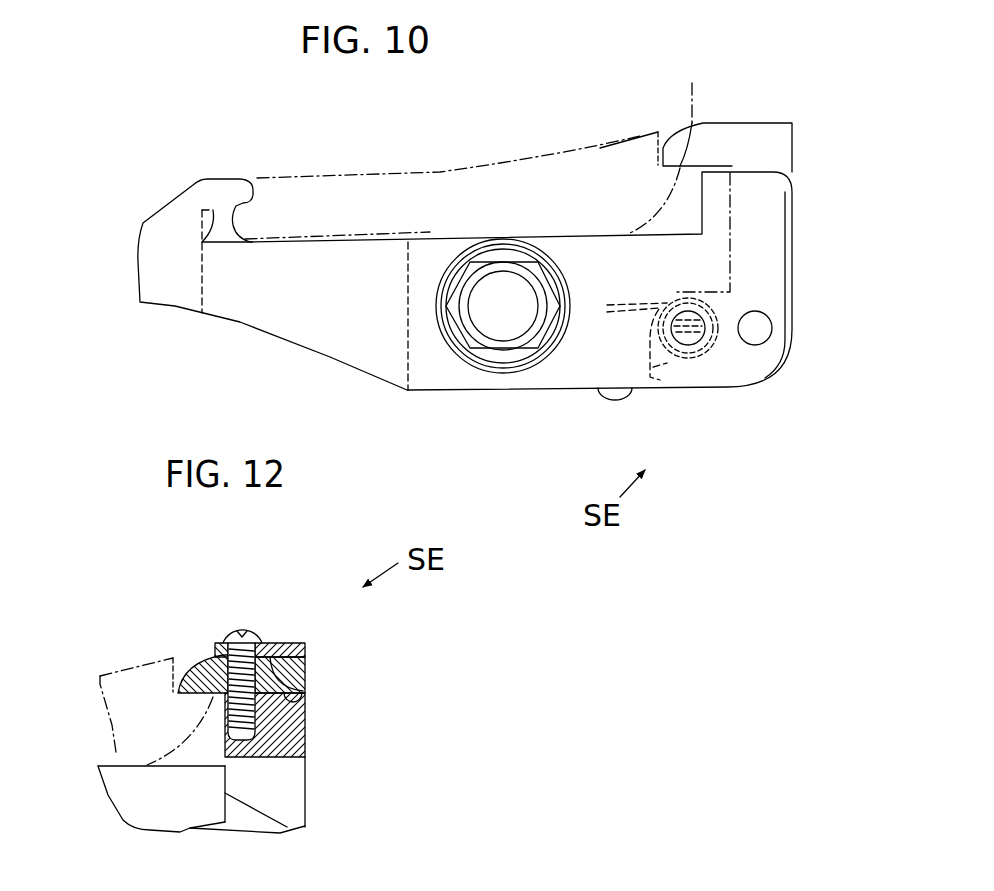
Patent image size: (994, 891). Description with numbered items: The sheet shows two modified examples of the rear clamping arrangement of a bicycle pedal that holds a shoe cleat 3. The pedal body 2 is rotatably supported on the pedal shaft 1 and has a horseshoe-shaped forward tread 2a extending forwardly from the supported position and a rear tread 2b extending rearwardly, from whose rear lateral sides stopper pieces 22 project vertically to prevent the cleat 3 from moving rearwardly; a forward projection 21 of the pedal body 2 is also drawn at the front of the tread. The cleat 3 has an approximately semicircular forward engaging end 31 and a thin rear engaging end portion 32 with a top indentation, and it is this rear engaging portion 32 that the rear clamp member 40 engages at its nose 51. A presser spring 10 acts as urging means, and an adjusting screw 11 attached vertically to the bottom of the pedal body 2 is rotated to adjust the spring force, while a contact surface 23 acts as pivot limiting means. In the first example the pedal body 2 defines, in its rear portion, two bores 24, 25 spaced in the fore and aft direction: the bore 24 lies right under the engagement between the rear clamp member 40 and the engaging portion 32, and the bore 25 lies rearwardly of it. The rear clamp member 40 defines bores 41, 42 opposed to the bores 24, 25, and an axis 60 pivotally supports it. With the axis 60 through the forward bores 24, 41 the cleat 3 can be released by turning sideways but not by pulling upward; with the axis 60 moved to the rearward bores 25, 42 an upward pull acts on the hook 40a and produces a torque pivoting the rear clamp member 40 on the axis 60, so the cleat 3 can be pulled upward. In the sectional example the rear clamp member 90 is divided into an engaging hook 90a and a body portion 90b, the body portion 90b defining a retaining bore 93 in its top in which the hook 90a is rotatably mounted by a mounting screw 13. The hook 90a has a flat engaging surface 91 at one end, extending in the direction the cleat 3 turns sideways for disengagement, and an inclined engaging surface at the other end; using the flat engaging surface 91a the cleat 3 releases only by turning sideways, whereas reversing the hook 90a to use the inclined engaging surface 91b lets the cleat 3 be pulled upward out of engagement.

In FIG. 10, the pedal shaft 1 is at (502, 333).
In FIG. 10, the pedal body 2 is at (552, 234).
In FIG. 12, the pedal body 2 is at (140, 813).
In FIG. 10, the forward tread 2a is at (317, 238).
In FIG. 10, the rear tread 2b is at (618, 233).
In FIG. 10, the cleat 3 is at (440, 168).
In FIG. 12, the cleat 3 is at (100, 676).
In FIG. 10, the presser spring 10 is at (663, 380).
In FIG. 10, the adjusting screw 11 is at (598, 400).
In FIG. 12, the mounting screw 13 is at (230, 633).
In FIG. 10, the stop projection 21 is at (238, 183).
In FIG. 10, the stopper piece 22 is at (713, 200).
In FIG. 12, the contact surface 23 is at (300, 826).
In FIG. 10, the bore 24 is at (690, 343).
In FIG. 10, the bore 25 is at (757, 342).
In FIG. 10, the forward engaging end 31 is at (213, 208).
In FIG. 10, the rear engaging end portion 32 is at (703, 170).
In FIG. 12, the rear engaging end portion 32 is at (192, 672).
In FIG. 10, the rear clamp member 40 is at (780, 120).
In FIG. 10, the hook 40a is at (733, 132).
In FIG. 10, the bore 41 is at (718, 314).
In FIG. 10, the bore 42 is at (770, 322).
In FIG. 10, the clamp nose 51 is at (672, 137).
In FIG. 10, the axis 60 is at (700, 342).
In FIG. 12, the rear clamp member 90 is at (307, 650).
In FIG. 12, the engaging hook 90a is at (272, 655).
In FIG. 12, the body portion 90b is at (305, 748).
In FIG. 12, the flat engaging surface 91 is at (203, 673).
In FIG. 12, the flat engaging surface 91a is at (302, 712).
In FIG. 12, the inclined engaging surface 91b is at (177, 692).
In FIG. 12, the retaining bore 93 is at (293, 648).